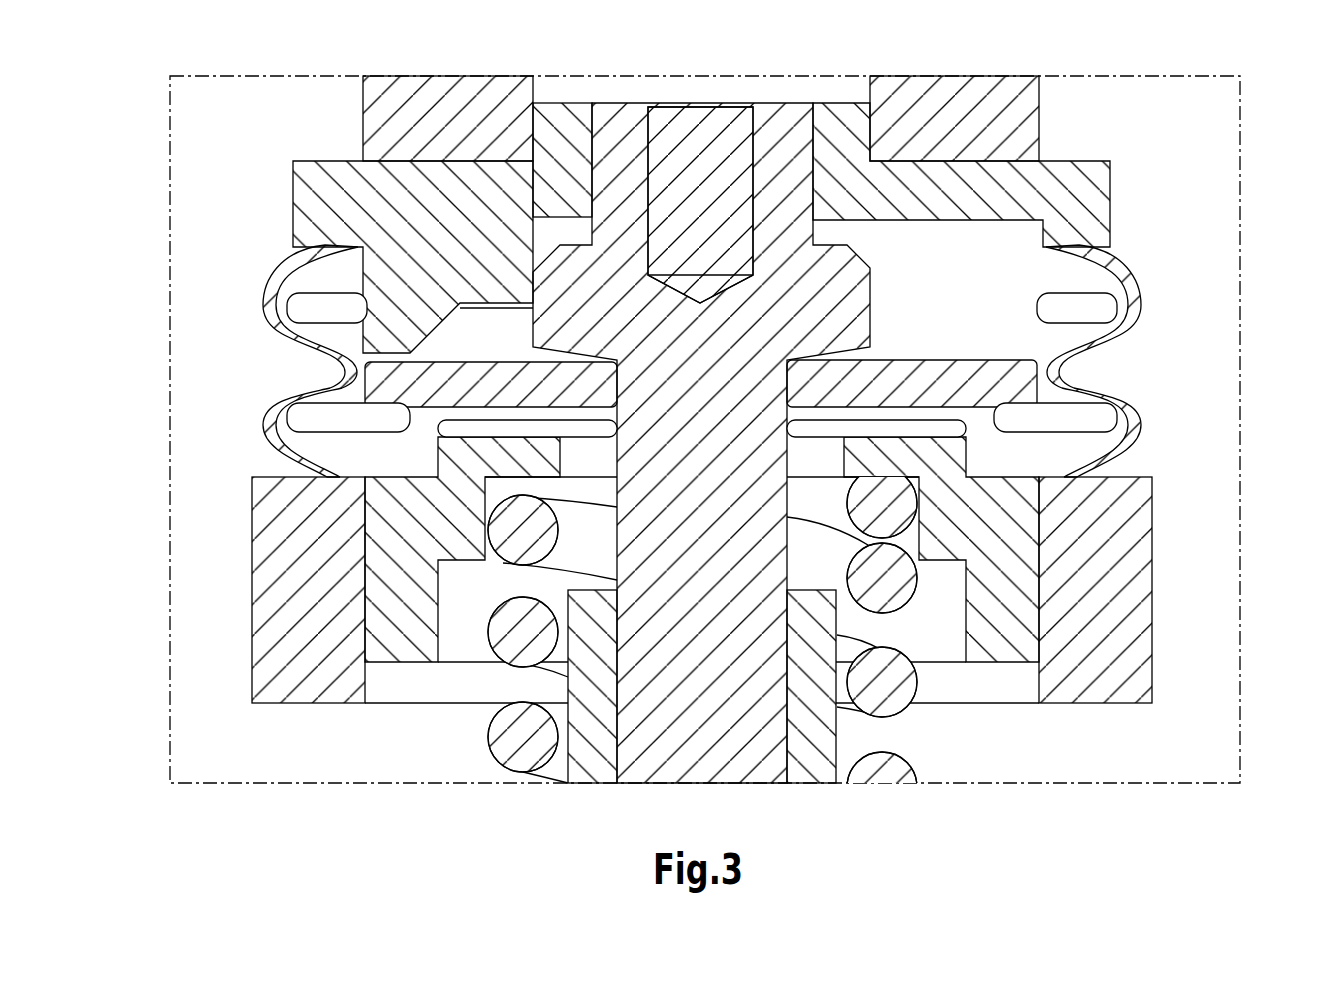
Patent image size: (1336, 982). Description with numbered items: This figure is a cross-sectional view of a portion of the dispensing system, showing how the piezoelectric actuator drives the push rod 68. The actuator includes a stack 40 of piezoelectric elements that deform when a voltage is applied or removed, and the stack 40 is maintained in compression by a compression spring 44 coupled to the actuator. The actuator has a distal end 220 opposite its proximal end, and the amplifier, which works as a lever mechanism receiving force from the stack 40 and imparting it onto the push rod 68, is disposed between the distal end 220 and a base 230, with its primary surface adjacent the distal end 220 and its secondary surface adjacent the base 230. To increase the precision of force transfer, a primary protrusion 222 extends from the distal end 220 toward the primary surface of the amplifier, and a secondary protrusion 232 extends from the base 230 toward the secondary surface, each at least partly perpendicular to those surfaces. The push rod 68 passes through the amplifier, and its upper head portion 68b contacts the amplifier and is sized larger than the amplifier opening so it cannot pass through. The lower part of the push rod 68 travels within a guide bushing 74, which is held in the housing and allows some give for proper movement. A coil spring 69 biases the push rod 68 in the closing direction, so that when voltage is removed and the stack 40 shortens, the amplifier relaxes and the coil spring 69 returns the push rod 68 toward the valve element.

The stack 40 is at (993, 103).
The distal end 220 is at (1080, 197).
The upper head portion 68b is at (565, 290).
The compression spring 44 is at (277, 313).
The primary protrusion 222 is at (1040, 316).
The secondary protrusion 232 is at (1143, 430).
The base 230 is at (1003, 615).
The push rod 68 is at (663, 723).
The coil spring 69 is at (523, 638).
The guide bushing 74 is at (808, 743).